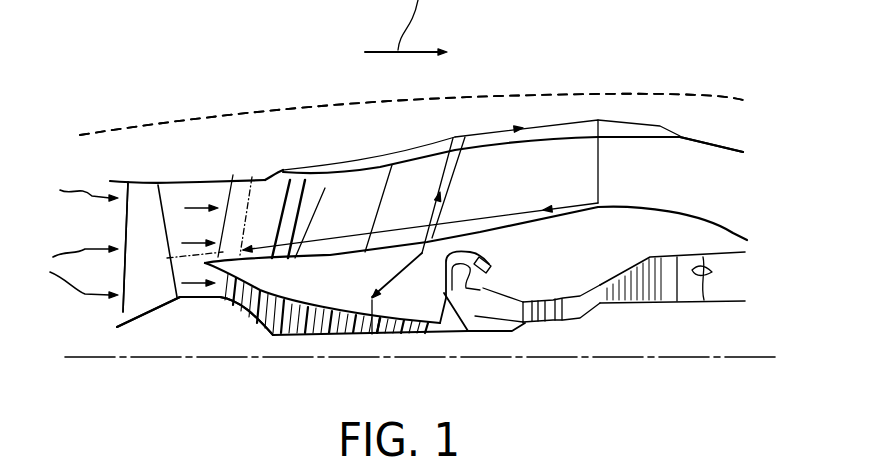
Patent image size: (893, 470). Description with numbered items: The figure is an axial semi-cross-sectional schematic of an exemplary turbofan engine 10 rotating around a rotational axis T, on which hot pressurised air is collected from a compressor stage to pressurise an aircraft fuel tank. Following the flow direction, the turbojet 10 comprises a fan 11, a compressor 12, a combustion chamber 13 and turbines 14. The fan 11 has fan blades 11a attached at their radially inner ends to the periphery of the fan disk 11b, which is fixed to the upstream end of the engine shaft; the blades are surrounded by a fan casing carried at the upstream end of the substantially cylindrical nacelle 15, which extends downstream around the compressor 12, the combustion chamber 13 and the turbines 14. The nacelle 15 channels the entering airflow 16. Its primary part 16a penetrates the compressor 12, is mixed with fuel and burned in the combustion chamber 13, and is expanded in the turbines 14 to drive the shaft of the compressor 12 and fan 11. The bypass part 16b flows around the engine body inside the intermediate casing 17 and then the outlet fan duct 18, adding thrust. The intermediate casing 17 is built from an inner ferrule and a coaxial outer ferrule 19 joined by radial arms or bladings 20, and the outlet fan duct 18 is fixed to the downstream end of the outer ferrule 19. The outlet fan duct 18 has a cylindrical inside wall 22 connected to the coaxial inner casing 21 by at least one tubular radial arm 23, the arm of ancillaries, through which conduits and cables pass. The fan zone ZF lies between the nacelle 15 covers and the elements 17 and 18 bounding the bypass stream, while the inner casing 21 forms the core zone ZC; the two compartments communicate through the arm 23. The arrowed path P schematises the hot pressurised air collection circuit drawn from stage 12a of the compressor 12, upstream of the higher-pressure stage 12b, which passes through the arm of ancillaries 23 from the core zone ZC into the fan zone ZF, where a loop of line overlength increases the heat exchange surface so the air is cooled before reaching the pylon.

The turbofan engine 10 is at (727, 84).
The fan 11 is at (131, 332).
The fan blades 11a is at (135, 229).
The fan disk 11b is at (130, 318).
The compressor 12 is at (321, 345).
The compressor stage 12a is at (372, 336).
The compressor stage 12b is at (385, 336).
The combustion chamber 13 is at (508, 348).
The turbines 14 is at (634, 336).
The nacelle 15 is at (183, 118).
The airflow 16 is at (71, 233).
The primary air 16a is at (192, 299).
The bypass flow 16b is at (197, 243).
The intermediate casing 17 is at (284, 170).
The outlet fan duct 18 is at (590, 124).
The outer ferrule 19 is at (307, 188).
The radial arms 20 is at (236, 185).
The inner casing 21 is at (527, 213).
The inside wall 22 is at (617, 139).
The tubular radial arm 23 is at (417, 195).
The arrowed path P is at (236, 255).
The fan zone ZF is at (322, 146).
The core zone ZC is at (352, 296).
The rotational axis T is at (713, 358).